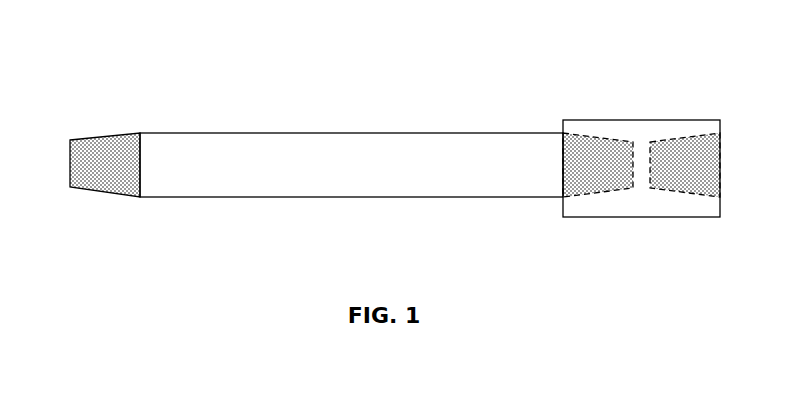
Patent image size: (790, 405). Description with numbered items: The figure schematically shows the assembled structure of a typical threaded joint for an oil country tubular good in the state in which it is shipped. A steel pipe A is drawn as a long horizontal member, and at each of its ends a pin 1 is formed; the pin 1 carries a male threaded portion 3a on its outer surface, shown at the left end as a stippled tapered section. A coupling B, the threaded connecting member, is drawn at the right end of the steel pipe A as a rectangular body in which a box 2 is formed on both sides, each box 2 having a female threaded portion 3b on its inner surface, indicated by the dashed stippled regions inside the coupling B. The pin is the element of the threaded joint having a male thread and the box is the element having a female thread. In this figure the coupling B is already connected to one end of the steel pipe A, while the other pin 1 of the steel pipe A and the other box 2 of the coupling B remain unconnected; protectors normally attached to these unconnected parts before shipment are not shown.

The pin 1 is at (383, 144).
The box 2 is at (641, 157).
The male threaded portion 3a is at (93, 137).
The female threaded portion 3b is at (595, 193).
The steel pipe A is at (305, 110).
The coupling B is at (641, 144).